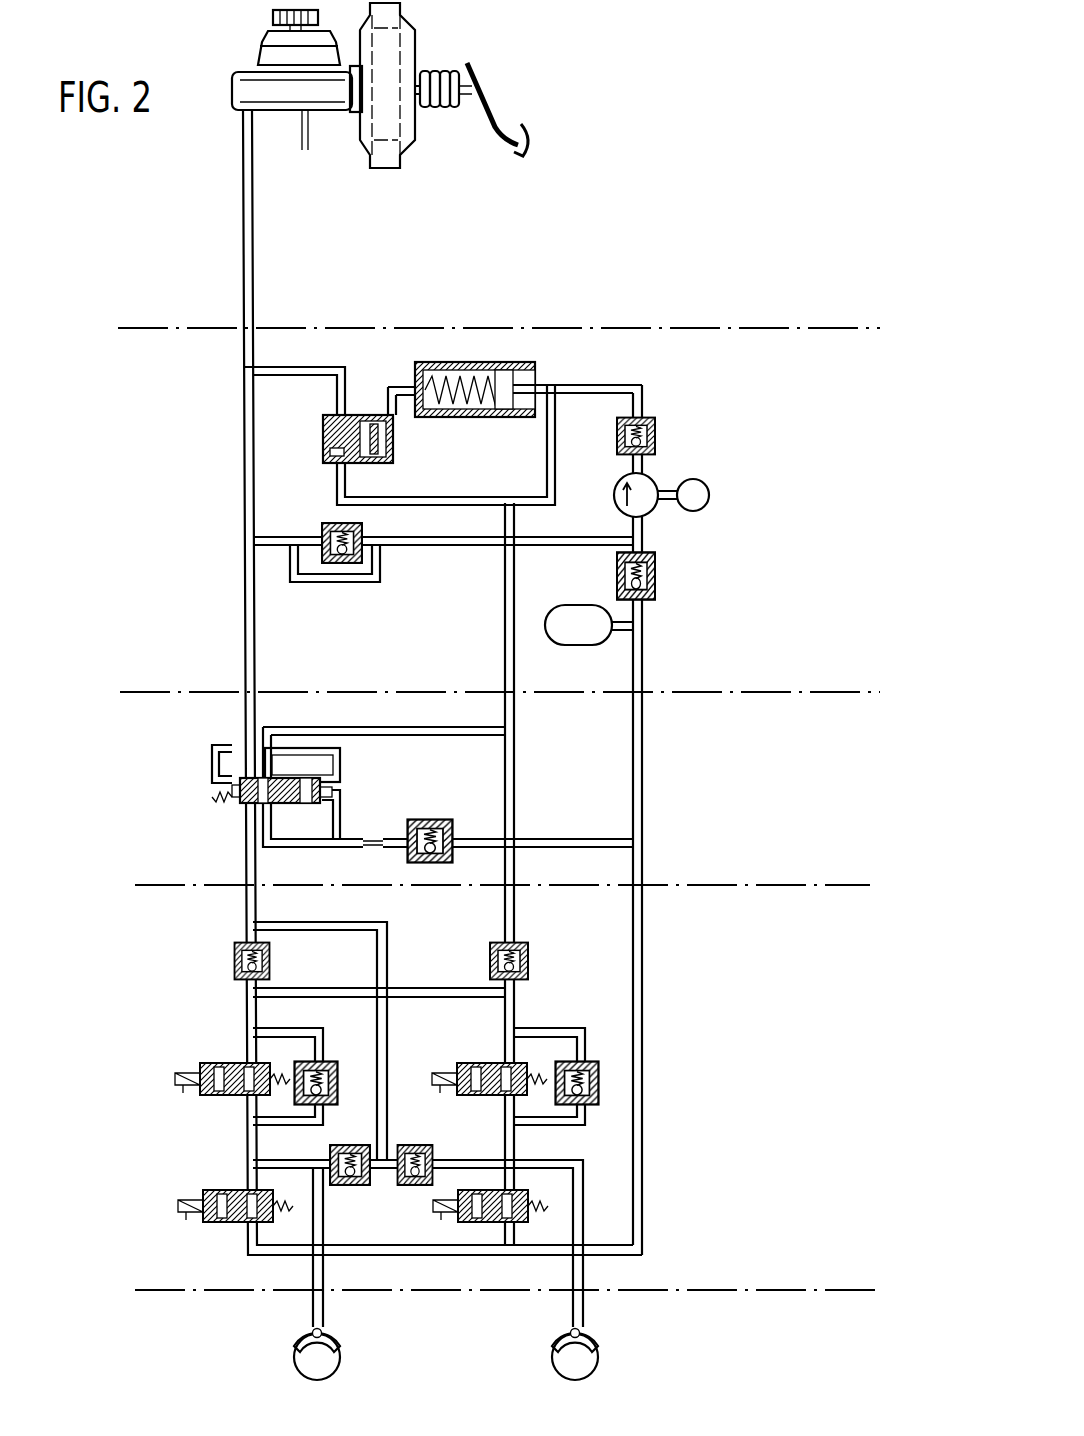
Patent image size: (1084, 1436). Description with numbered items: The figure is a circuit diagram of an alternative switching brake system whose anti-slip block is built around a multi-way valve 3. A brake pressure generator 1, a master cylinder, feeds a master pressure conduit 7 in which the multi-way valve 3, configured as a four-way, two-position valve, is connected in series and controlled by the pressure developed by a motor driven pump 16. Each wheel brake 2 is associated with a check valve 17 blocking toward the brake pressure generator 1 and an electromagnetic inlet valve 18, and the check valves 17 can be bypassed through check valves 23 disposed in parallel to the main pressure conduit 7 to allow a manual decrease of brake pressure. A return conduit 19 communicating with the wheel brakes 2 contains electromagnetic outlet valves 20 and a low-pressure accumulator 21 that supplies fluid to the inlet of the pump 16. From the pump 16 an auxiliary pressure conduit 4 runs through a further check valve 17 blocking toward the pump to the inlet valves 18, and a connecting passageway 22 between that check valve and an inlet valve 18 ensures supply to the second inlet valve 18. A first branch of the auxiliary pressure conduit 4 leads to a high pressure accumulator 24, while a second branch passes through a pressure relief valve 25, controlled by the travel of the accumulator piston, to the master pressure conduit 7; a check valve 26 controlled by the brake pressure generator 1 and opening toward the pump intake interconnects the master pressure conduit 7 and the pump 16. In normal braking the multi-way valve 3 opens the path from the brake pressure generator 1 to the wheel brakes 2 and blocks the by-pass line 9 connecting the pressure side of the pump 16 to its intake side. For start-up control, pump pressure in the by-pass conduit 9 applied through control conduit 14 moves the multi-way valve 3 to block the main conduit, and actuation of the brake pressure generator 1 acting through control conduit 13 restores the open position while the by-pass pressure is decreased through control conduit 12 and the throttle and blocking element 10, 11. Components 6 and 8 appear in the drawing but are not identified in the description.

The brake pressure generator 1 is at (387, 45).
The wheel brake 2 is at (305, 1360).
The multi-way valve 3 is at (225, 793).
The auxiliary pressure conduit 4 is at (632, 387).
The check valve 6 is at (650, 568).
The master pressure conduit 7 is at (244, 226).
The line 8 is at (428, 548).
The by-pass line 9 is at (355, 727).
The throttle element 10 is at (388, 824).
The blocking element 11 is at (440, 820).
The control conduit 12 is at (322, 818).
The control conduit 13 is at (213, 745).
The control conduit 14 is at (340, 764).
The pump 16 is at (650, 480).
The check valve 17 is at (235, 956).
The electromagnetic inlet valve 18 is at (225, 1063).
The return conduit 19 is at (642, 762).
The electromagnetic outlet valve 20 is at (225, 1190).
The low-pressure accumulator 21 is at (588, 625).
The connecting passageway 22 is at (405, 988).
The check valve 23 is at (406, 1186).
The high pressure accumulator 24 is at (503, 387).
The pressure relief valve 25 is at (365, 413).
The check valve 26 is at (325, 522).